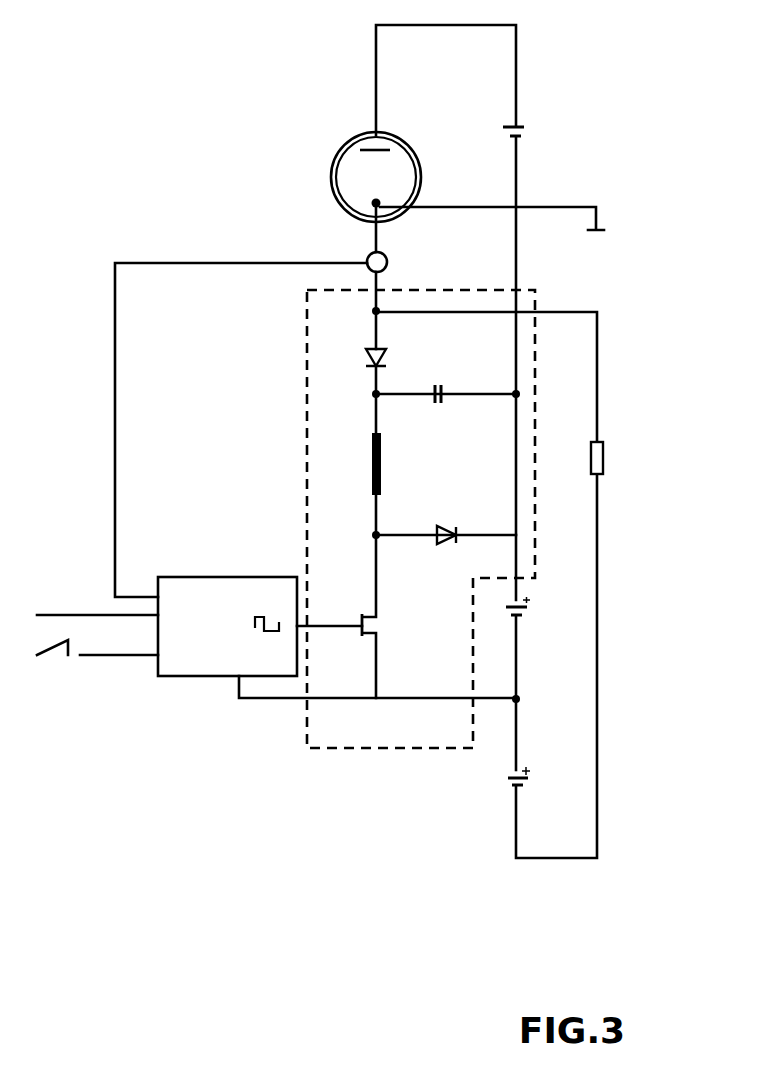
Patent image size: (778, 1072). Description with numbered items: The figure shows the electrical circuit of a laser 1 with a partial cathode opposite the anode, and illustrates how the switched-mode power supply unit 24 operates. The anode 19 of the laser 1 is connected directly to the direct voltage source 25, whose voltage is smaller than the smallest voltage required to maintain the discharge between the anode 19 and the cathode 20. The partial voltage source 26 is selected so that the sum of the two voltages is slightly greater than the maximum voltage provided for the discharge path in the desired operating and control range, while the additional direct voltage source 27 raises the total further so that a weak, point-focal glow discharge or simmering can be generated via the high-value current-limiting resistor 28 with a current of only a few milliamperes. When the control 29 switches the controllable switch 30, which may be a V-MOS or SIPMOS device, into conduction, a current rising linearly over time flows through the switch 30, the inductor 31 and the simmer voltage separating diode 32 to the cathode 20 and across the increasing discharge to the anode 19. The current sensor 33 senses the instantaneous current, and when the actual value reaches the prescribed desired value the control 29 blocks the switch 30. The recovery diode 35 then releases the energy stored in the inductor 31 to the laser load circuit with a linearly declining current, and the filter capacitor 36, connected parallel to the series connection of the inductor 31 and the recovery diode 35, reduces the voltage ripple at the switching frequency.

The laser 1 is at (338, 152).
The anode 19 is at (390, 138).
The cathode 20 is at (380, 206).
The switched-mode power supply unit 24 is at (325, 756).
The direct voltage source of the anode 25 is at (530, 123).
The partial voltage source 26 is at (537, 605).
The additional direct voltage source 27 is at (537, 773).
The current-limiting resistor 28 is at (608, 461).
The control 29 is at (220, 575).
The controllable switch 30 is at (382, 625).
The inductor 31 is at (372, 478).
The simmer voltage separating diode 32 is at (365, 357).
The current sensor 33 is at (366, 255).
The recovery diode 35 is at (448, 528).
The filter capacitor 36 is at (443, 382).